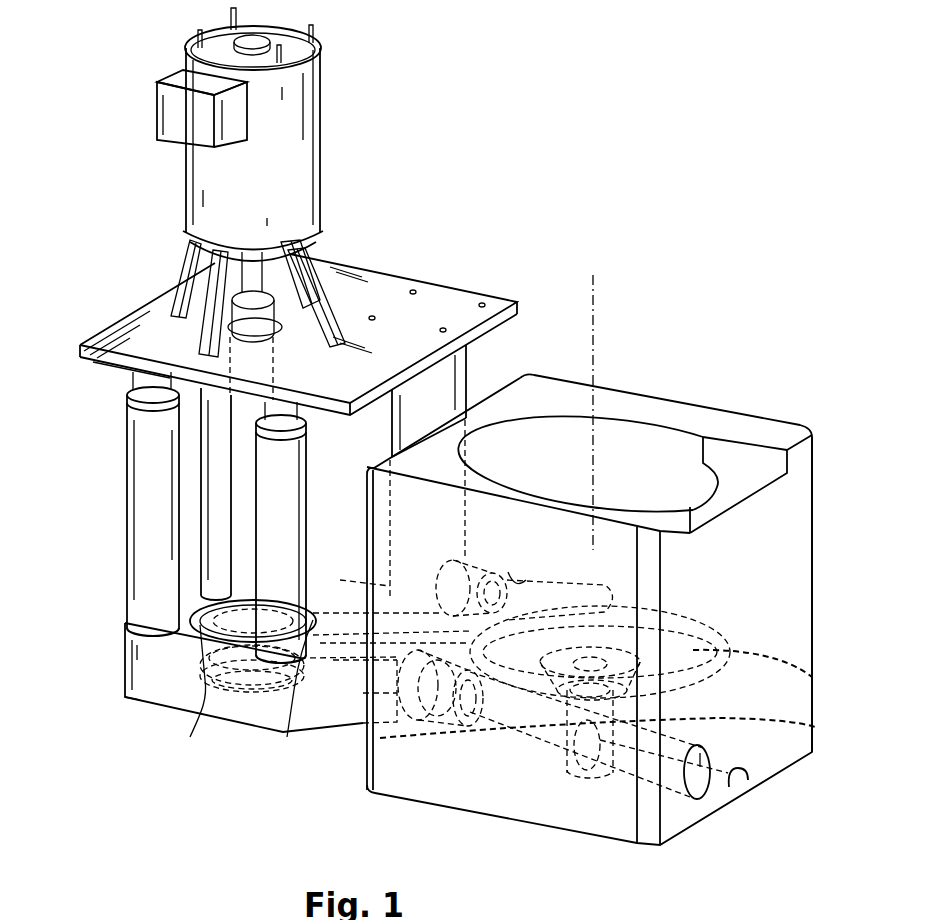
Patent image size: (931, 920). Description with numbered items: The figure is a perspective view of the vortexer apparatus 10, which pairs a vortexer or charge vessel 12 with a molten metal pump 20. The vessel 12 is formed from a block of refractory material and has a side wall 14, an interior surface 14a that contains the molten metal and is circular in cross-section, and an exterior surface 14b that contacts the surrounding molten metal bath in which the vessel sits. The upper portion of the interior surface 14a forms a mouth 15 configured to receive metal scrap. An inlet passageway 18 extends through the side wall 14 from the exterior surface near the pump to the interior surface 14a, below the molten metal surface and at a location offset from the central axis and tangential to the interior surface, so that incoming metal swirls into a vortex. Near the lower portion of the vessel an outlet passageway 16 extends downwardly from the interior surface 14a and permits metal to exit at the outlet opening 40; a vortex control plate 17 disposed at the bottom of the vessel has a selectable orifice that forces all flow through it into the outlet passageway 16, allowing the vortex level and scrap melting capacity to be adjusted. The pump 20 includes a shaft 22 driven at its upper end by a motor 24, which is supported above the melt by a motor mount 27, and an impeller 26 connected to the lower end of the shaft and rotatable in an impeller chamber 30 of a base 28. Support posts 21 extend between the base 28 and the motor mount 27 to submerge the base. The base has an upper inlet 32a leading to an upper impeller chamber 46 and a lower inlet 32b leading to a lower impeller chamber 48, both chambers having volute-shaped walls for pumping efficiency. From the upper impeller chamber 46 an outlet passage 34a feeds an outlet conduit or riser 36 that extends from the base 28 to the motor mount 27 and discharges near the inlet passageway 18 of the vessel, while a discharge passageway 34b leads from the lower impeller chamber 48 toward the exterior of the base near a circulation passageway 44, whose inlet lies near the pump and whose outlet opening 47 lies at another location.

The vortexer apparatus 10 is at (581, 327).
The vortexer or charge vessel 12 is at (773, 590).
The side wall 14 is at (728, 426).
The interior surface 14a is at (636, 437).
The exterior surface 14b is at (795, 513).
The mouth 15 is at (557, 428).
The outlet passageway 16 is at (810, 727).
The vortex control plate 17 is at (812, 675).
The inlet passageway 18 is at (512, 575).
The pump 20 is at (152, 258).
The support posts 21 is at (217, 432).
The shaft 22 is at (233, 488).
The motor 24 is at (220, 180).
The impeller 26 is at (190, 737).
The motor mount 27 is at (130, 340).
The base 28 is at (287, 737).
The impeller chamber 30 is at (227, 720).
The upper inlet 32a is at (190, 592).
The lower inlet 32b is at (250, 722).
The outlet passage 34a is at (360, 612).
The discharge passageway 34b is at (335, 683).
The outlet conduit or riser 36 is at (414, 405).
The outlet opening 40 is at (733, 787).
The circulation passageway 44 is at (505, 740).
The upper impeller chamber 46 is at (147, 661).
The outlet opening 47 is at (712, 800).
The lower impeller chamber 48 is at (180, 700).